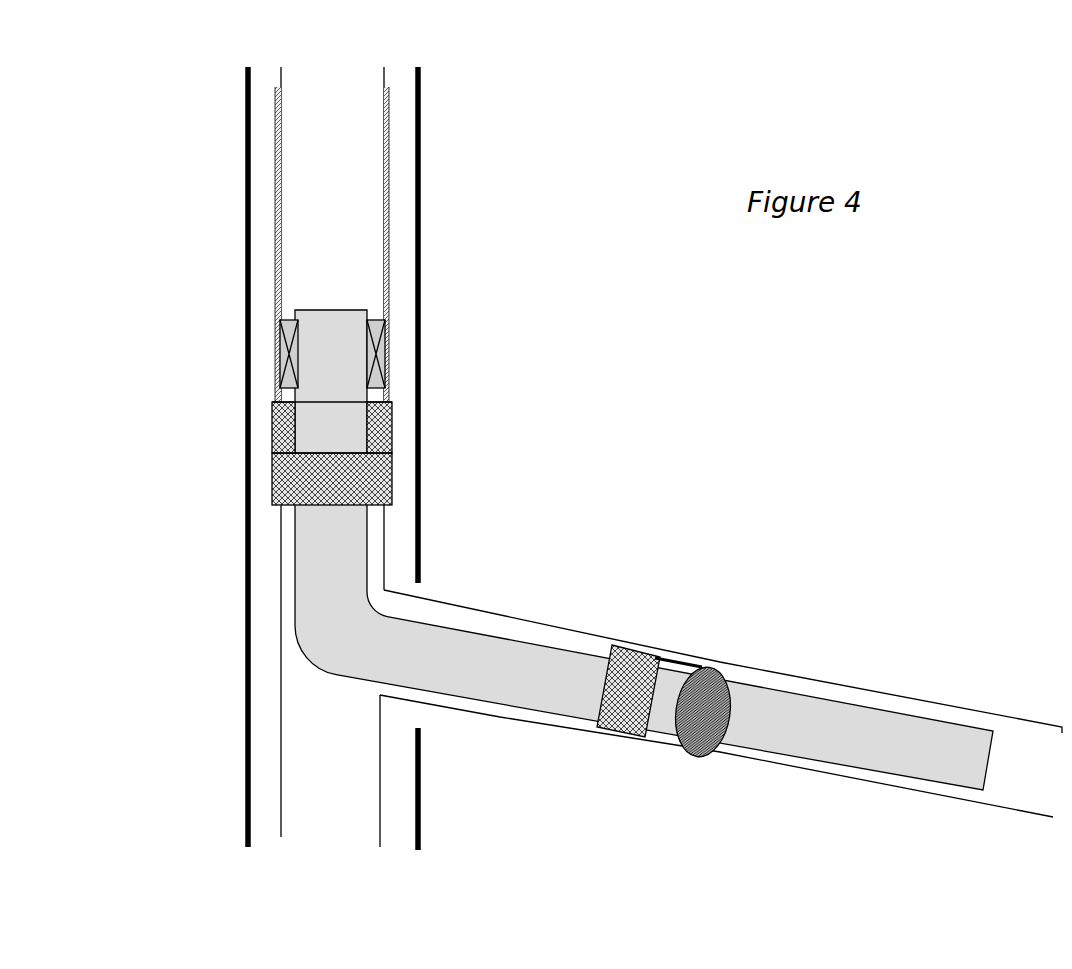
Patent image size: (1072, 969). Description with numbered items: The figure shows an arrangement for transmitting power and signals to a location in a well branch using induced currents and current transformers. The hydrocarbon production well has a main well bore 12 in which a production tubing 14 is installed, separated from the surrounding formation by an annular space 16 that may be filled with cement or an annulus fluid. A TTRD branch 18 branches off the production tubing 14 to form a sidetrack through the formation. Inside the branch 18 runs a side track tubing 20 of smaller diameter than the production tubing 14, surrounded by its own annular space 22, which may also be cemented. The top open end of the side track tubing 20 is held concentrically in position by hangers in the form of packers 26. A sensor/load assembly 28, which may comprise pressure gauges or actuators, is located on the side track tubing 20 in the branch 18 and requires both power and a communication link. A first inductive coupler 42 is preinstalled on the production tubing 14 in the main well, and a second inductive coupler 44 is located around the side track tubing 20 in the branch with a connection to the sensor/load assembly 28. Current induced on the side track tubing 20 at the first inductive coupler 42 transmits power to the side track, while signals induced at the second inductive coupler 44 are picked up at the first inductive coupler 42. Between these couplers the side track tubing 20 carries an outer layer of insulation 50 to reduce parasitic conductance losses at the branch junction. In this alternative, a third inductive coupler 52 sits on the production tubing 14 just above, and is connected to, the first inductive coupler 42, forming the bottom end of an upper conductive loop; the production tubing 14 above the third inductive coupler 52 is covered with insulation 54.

The main well bore 12 is at (248, 745).
The production tubing 14 is at (281, 674).
The annular space 16 is at (255, 575).
The TTRD branch 18 is at (850, 688).
The side track tubing 20 is at (903, 775).
The annular space 22 is at (792, 766).
The packers 26 is at (385, 348).
The sensor/load assembly 28 is at (702, 758).
The first inductive coupler 42 is at (272, 480).
The second inductive coupler 44 is at (622, 738).
The insulation 50 is at (438, 625).
The third inductive coupler 52 is at (272, 425).
The insulation 54 is at (275, 243).